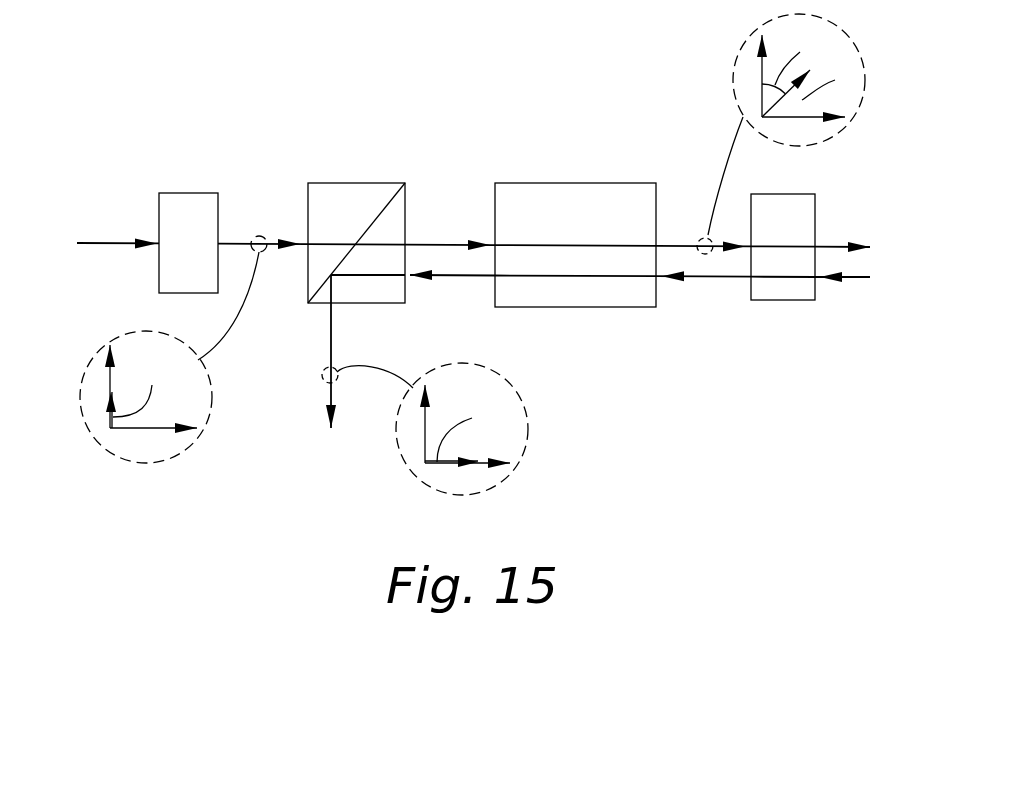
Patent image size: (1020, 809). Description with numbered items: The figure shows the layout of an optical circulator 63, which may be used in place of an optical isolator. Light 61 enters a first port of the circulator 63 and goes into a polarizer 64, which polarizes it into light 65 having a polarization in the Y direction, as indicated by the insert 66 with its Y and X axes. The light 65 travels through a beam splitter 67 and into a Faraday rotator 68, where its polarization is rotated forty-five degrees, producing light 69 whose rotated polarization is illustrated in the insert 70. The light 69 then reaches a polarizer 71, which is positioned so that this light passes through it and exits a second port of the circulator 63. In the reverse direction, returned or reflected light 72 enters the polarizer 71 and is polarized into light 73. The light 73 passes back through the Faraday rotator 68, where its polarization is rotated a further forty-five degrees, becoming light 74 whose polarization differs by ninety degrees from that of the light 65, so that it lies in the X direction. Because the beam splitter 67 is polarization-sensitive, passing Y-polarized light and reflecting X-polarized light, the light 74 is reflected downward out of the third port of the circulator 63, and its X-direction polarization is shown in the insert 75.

The light 61 is at (105, 243).
The optical circulator 63 is at (574, 102).
The polarizer 64 is at (185, 193).
The light 65 is at (237, 243).
The insert 66 is at (212, 392).
The beam splitter 67 is at (350, 183).
The Faraday rotator 68 is at (540, 183).
The light 69 is at (670, 245).
The insert 70 is at (740, 52).
The polarizer 71 is at (772, 194).
The returned or reflected light 72 is at (856, 279).
The light 73 is at (708, 279).
The light 74 is at (333, 330).
The insert 75 is at (510, 383).